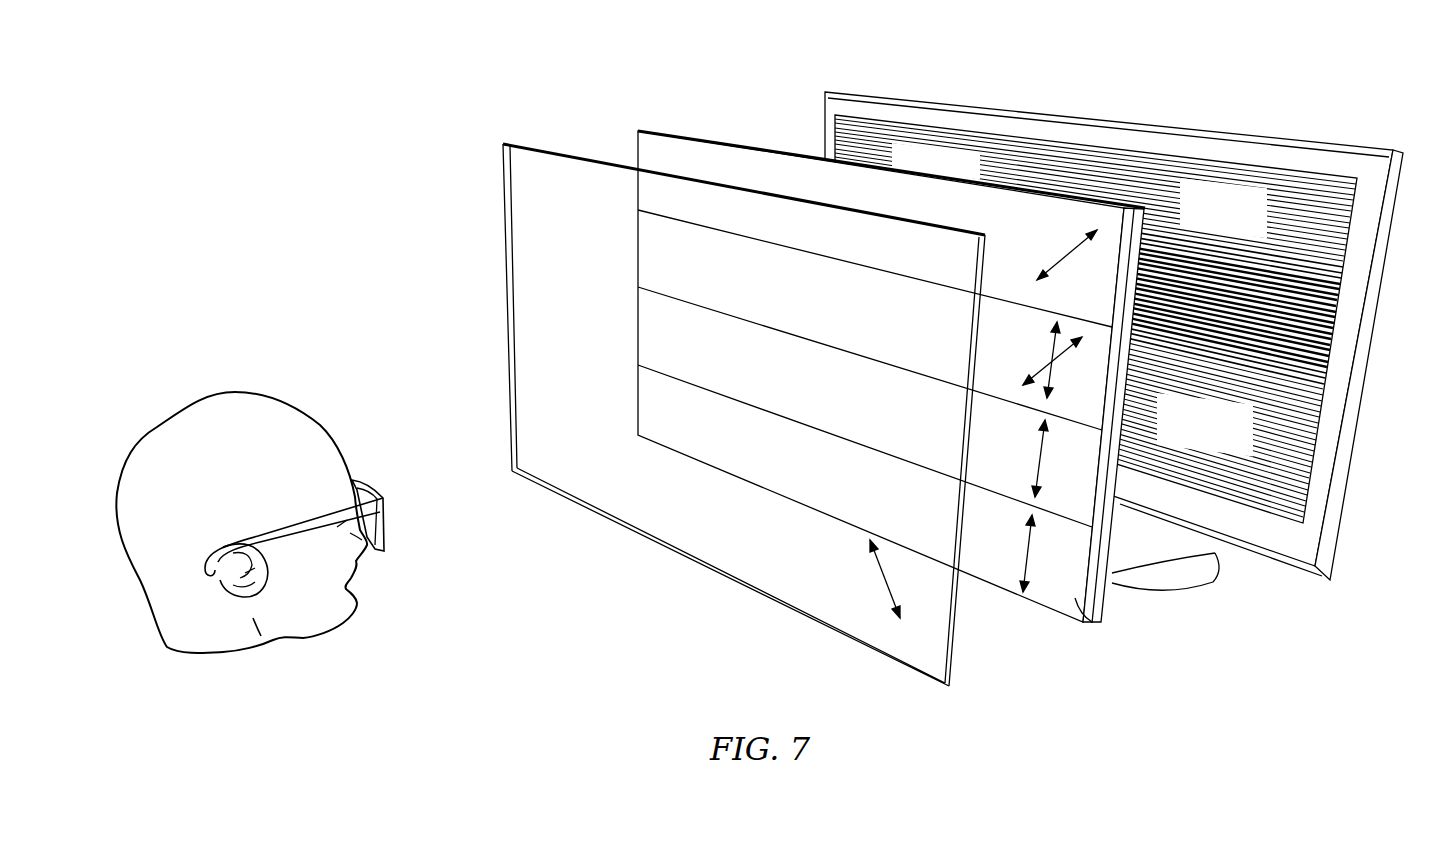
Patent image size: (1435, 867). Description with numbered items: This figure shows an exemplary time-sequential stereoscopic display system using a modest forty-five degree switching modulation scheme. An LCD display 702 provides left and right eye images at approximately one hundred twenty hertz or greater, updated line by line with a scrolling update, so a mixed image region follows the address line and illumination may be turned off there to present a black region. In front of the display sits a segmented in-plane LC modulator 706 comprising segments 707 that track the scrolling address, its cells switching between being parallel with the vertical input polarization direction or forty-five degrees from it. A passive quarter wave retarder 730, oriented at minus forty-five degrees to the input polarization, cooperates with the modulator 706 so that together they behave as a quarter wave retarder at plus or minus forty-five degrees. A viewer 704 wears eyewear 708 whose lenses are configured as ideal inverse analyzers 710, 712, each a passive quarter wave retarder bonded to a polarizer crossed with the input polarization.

The LCD display 702 is at (1202, 128).
The viewer 704 is at (202, 407).
The in-plane LC modulator 706 is at (1035, 631).
The segments 707 is at (1075, 513).
The eyewear 708 is at (346, 520).
The inverse analyzer 710 is at (371, 483).
The inverse analyzer 712 is at (432, 548).
The passive quarter wave retarder 730 is at (558, 166).